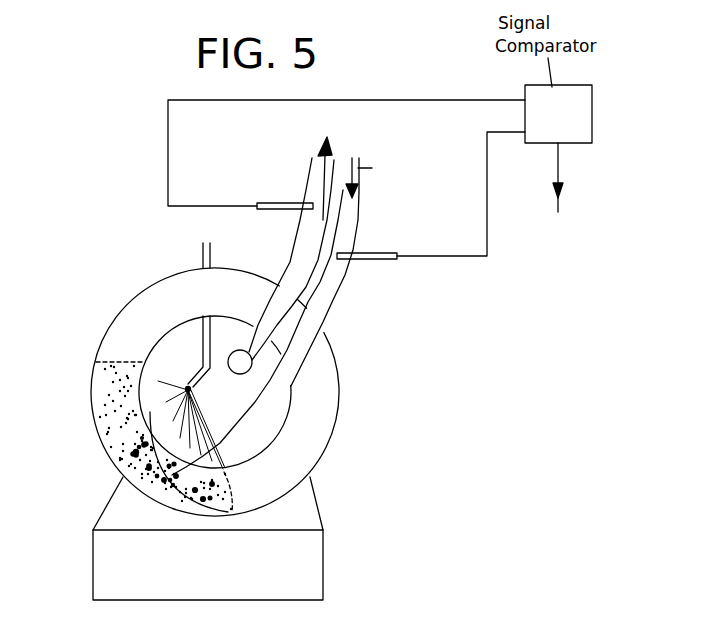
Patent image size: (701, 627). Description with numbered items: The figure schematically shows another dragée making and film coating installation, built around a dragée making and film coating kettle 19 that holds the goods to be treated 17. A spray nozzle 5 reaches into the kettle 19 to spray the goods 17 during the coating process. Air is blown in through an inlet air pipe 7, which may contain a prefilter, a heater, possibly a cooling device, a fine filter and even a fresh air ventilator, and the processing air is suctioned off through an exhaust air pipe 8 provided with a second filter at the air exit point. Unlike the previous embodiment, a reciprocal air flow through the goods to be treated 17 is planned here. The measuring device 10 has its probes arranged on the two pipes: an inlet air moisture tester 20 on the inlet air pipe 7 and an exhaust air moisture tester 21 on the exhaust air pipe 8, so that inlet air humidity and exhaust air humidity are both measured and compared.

The spray nozzle 5 is at (193, 387).
The inlet air pipe 7 is at (370, 214).
The exhaust air pipe 8 is at (292, 238).
The measuring device 10 is at (463, 288).
The goods to be treated 17 is at (100, 409).
The dragée making and film coating kettle 19 is at (339, 467).
The inlet air moisture tester 20 is at (372, 262).
The exhaust air moisture tester 21 is at (278, 203).